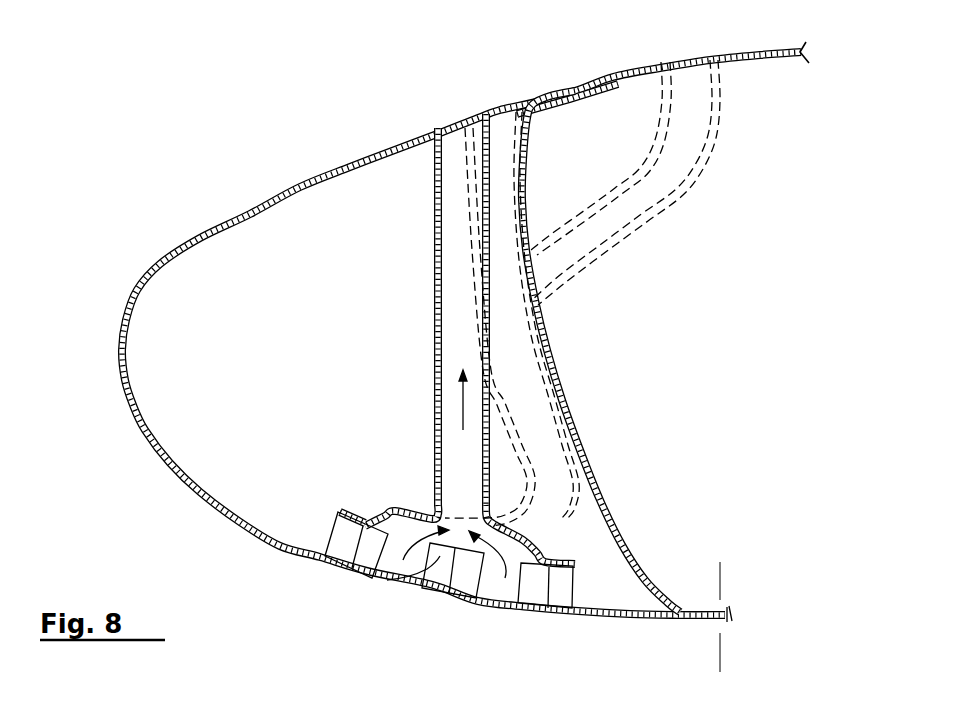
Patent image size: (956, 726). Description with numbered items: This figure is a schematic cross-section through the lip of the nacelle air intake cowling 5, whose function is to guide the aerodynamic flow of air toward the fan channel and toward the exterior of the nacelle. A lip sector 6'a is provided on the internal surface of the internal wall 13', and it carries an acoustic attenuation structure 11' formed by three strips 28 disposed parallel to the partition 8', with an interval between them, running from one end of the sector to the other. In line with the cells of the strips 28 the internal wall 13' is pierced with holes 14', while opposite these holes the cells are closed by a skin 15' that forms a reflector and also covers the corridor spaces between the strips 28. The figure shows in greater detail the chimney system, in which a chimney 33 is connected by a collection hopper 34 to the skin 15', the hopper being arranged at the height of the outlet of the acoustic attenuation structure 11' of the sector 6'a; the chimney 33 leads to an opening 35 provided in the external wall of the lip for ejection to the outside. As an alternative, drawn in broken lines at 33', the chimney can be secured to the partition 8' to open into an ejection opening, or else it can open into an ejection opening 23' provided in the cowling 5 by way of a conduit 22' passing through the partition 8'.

The air intake cowling 5 is at (760, 60).
The lip sector 6'a is at (102, 333).
The partition 8' is at (601, 351).
The acoustic attenuation structure 11' is at (263, 497).
The internal wall 13' is at (289, 583).
The holes 14' is at (557, 652).
The skin 15' is at (342, 488).
The conduit 22' is at (648, 182).
The ejection opening 23' is at (637, 110).
The strips 28 is at (378, 555).
The chimney 33 is at (442, 339).
The chimney in alternative position 33' is at (521, 319).
The collection hopper 34 is at (391, 508).
The opening 35 is at (453, 135).